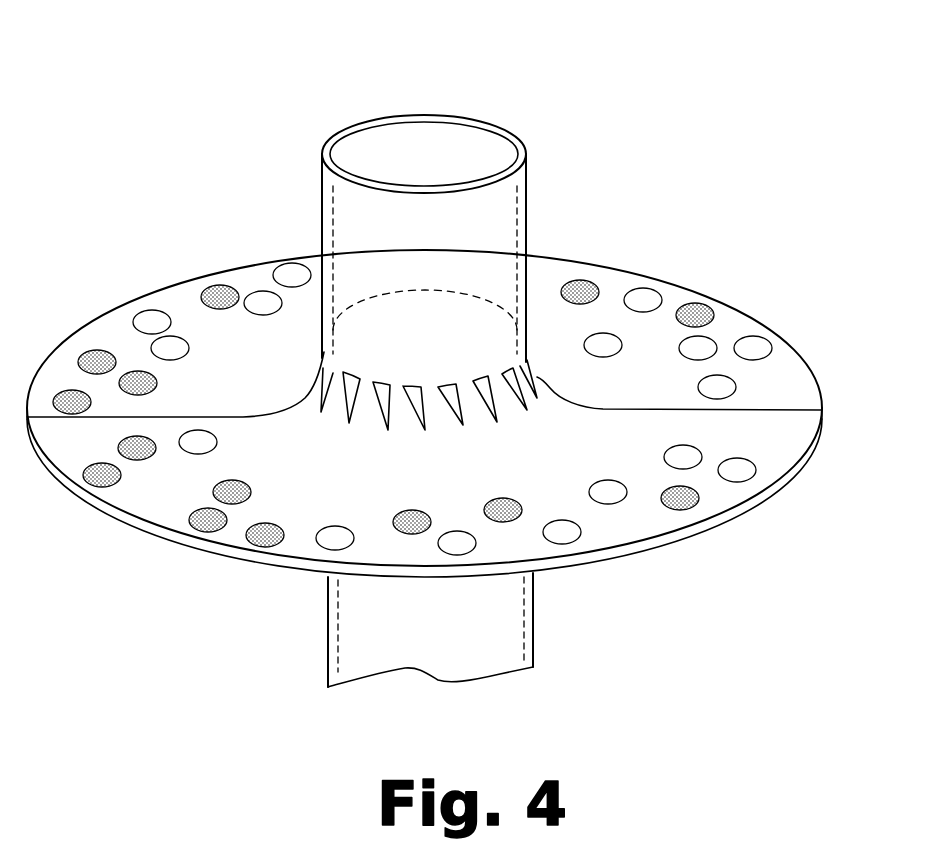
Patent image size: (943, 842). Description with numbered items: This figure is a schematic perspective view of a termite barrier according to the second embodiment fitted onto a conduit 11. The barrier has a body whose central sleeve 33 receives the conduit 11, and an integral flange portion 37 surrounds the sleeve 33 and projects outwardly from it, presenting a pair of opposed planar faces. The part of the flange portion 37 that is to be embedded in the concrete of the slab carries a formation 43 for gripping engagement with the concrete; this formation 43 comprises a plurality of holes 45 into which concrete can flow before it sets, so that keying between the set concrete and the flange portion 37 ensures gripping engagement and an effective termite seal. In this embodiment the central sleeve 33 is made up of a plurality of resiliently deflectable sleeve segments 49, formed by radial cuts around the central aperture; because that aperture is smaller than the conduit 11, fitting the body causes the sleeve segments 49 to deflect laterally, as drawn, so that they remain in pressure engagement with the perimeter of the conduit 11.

The conduit 11 is at (527, 178).
The central sleeve 33 is at (537, 377).
The flange portion 37 is at (713, 500).
The formation 43 is at (744, 337).
The holes 45 is at (735, 382).
The sleeve segments 49 is at (320, 382).